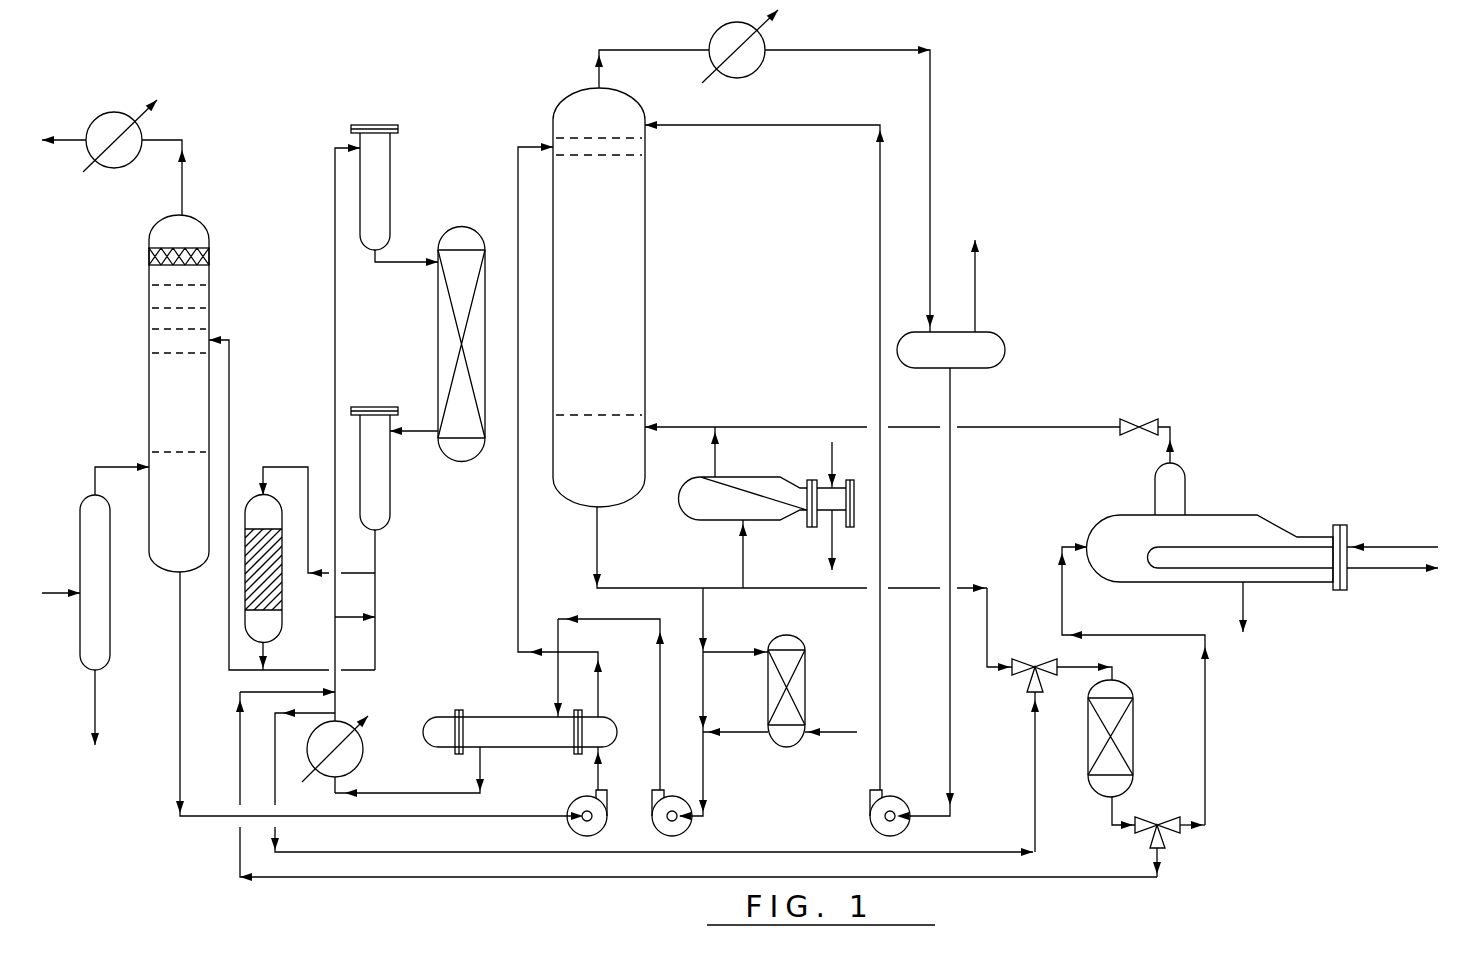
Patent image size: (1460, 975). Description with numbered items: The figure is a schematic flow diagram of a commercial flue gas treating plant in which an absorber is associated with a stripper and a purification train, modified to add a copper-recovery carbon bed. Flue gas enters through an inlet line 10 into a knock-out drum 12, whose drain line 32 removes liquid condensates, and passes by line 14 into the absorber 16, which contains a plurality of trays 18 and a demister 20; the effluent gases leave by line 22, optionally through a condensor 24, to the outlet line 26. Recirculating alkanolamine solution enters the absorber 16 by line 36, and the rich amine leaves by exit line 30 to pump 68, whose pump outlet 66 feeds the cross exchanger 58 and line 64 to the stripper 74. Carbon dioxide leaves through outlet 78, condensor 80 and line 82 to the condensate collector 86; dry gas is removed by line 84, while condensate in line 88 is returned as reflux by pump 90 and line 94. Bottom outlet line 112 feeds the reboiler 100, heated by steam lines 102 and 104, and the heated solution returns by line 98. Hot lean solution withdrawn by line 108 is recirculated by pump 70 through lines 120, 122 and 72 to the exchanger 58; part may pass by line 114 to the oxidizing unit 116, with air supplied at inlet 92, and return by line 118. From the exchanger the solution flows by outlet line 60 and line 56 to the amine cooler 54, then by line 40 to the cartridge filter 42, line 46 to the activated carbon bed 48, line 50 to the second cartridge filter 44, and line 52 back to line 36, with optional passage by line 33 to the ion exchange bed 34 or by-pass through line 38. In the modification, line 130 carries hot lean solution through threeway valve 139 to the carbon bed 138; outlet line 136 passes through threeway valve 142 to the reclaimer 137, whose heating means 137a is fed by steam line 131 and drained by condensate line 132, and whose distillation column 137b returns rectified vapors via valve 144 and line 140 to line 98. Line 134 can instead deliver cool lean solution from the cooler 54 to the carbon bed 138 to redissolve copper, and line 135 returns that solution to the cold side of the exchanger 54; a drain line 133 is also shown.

The inlet line 10 is at (52, 593).
The knock-out drum 12 is at (110, 585).
The line 14 is at (118, 467).
The absorber 16 is at (149, 336).
The trays 18 is at (178, 285).
The demister 20 is at (150, 258).
The line 22 is at (183, 182).
The condensor 24 is at (148, 105).
The outlet line 26 is at (72, 137).
The exit line 30 is at (180, 715).
The drain line 32 is at (95, 716).
The line 33 is at (297, 465).
The ion exchange bed 34 is at (282, 595).
The line 36 is at (229, 645).
The line 38 is at (340, 598).
The line 40 is at (335, 308).
The cartridge filter 42 is at (390, 172).
The second cartridge filter 44 is at (390, 495).
The line 46 is at (410, 262).
The activated carbon bed 48 is at (438, 335).
The line 50 is at (415, 431).
The line 52 is at (375, 668).
The amine cooler 54 is at (362, 752).
The line 56 is at (400, 793).
The cross exchanger 58 is at (510, 714).
The outlet line 60 is at (520, 748).
The line 64 is at (518, 615).
The pump outlet 66 is at (598, 780).
The pump 68 is at (570, 828).
The pump 70 is at (693, 828).
The line 72 is at (660, 680).
The stripper 74 is at (645, 298).
The outlet 78 is at (602, 50).
The condensor 80 is at (762, 62).
The line 82 is at (930, 158).
The line 84 is at (976, 298).
The condensate collector 86 is at (1005, 350).
The line 88 is at (950, 500).
The pump 90 is at (890, 790).
The inlet 92 is at (845, 732).
The line 94 is at (880, 375).
The line 98 is at (695, 427).
The reboiler 100 is at (752, 477).
The steam line 102 is at (832, 470).
The steam line 104 is at (832, 548).
The line 108 is at (703, 605).
The outlet line 112 is at (597, 555).
The line 114 is at (727, 637).
The oxidizing unit 116 is at (806, 648).
The line 118 is at (725, 732).
The line 120 is at (703, 788).
The line 122 is at (705, 705).
The line 130 is at (987, 592).
The line 131 is at (1405, 547).
The condensate line 132 is at (1380, 570).
The drain line 133 is at (1250, 610).
The line 134 is at (1033, 835).
The line 135 is at (1105, 877).
The line 136 is at (1205, 685).
The reclaimer 137 is at (1270, 515).
The heating means 137a is at (1345, 595).
The distillation column 137b is at (1185, 487).
The carbon bed 138 is at (1133, 730).
The threeway valve 139 is at (1037, 660).
The line 140 is at (1025, 427).
The threeway valve 142 is at (1160, 823).
The valve 144 is at (1140, 420).